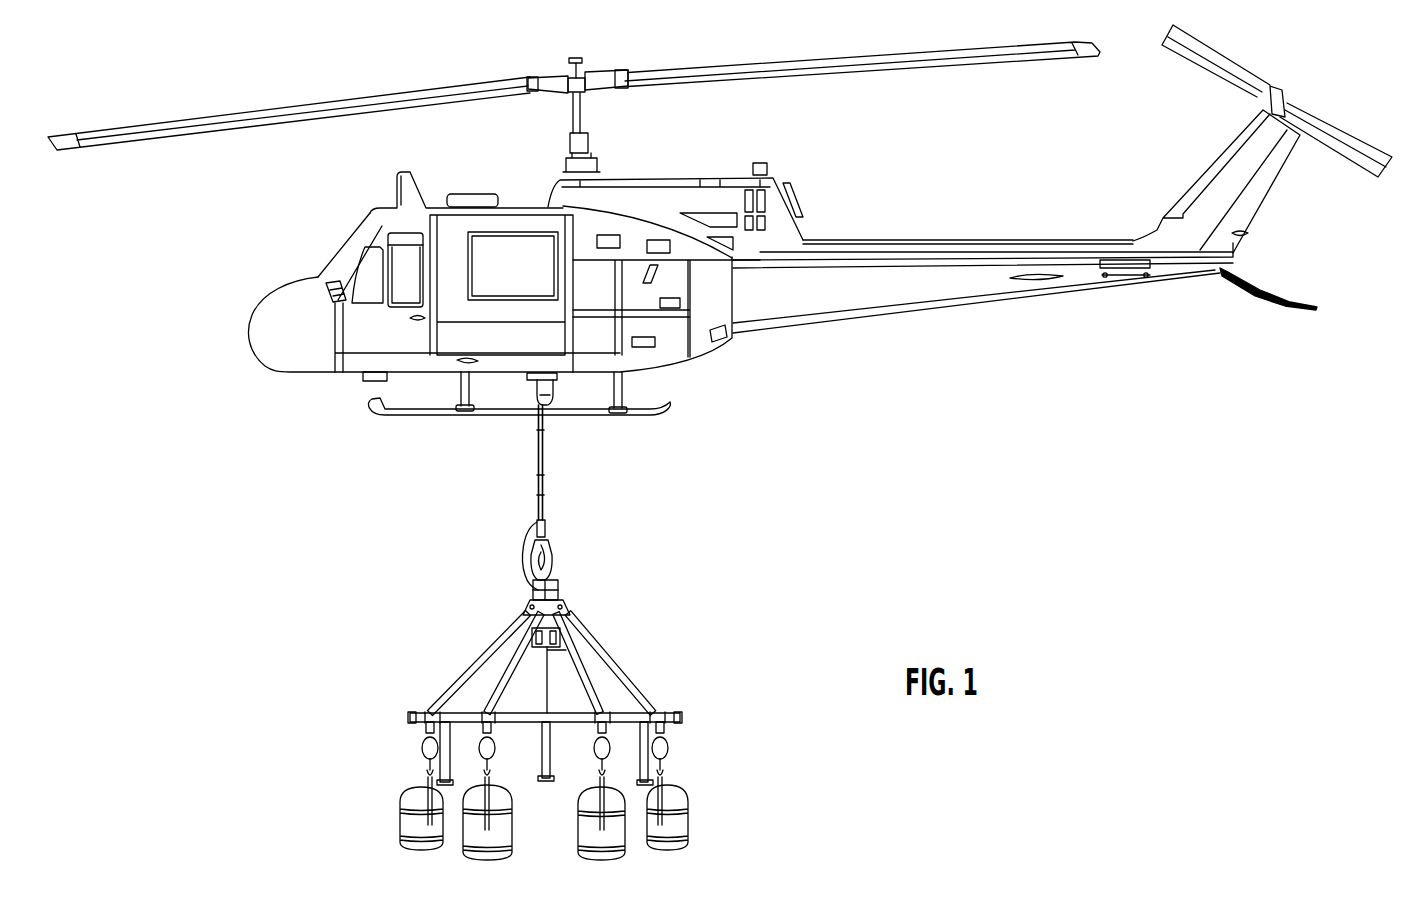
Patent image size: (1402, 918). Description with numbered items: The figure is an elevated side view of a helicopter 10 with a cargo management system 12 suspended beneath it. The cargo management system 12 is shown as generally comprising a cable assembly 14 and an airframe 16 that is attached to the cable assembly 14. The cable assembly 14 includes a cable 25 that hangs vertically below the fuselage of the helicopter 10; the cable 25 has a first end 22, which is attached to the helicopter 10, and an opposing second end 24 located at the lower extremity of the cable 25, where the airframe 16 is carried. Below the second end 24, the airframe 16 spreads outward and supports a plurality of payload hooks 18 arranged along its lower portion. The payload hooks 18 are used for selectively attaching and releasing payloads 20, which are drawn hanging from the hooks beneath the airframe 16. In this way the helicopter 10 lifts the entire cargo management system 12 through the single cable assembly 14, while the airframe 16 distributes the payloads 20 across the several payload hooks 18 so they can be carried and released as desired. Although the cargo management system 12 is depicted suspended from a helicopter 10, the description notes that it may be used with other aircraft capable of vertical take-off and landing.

The helicopter 10 is at (903, 307).
The cargo management system 12 is at (422, 513).
The cable assembly 14 is at (514, 499).
The airframe 16 is at (476, 622).
The payload hooks 18 is at (417, 753).
The payloads 20 is at (477, 840).
The first end 22 is at (538, 403).
The second end 24 is at (546, 527).
The cable 25 is at (545, 450).